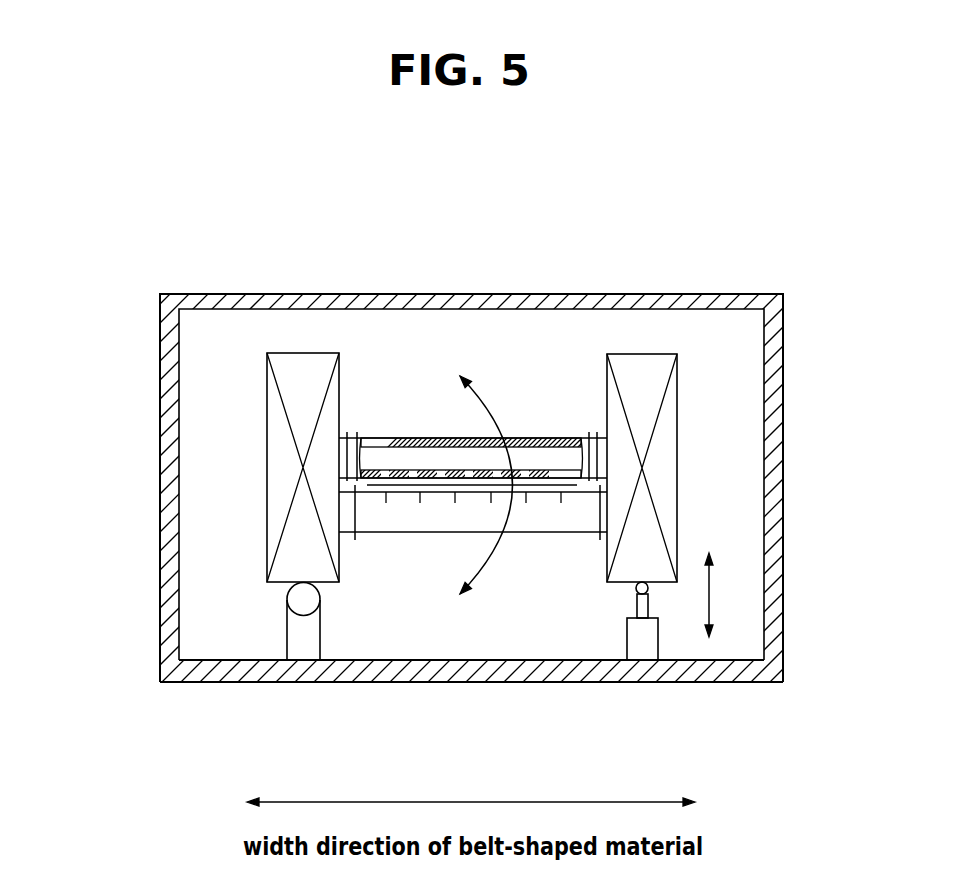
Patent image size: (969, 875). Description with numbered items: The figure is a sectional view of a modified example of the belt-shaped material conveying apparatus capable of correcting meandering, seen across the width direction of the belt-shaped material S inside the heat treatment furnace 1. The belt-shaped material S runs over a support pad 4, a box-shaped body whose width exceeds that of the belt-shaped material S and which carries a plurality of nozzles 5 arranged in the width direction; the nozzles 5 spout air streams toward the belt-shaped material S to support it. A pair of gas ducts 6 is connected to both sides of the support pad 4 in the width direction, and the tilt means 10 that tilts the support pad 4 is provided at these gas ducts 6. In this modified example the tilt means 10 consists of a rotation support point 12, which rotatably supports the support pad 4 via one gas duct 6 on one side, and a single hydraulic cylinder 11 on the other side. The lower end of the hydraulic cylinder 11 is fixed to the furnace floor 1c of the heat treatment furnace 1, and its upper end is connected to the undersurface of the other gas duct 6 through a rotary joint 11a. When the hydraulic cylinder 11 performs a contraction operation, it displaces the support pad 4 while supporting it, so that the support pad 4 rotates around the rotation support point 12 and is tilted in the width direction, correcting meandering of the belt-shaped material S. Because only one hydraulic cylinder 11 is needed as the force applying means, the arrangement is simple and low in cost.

The heat treatment furnace 1 is at (773, 198).
The furnace floor 1c is at (492, 661).
The support pad 4 is at (400, 438).
The nozzle 5 is at (522, 478).
The gas duct 6 is at (267, 405).
The tilt means 10 is at (222, 623).
The hydraulic cylinder 11 is at (655, 643).
The rotary joint 11a is at (636, 590).
The rotation support point 12 is at (318, 598).
The belt-shaped material S is at (436, 493).